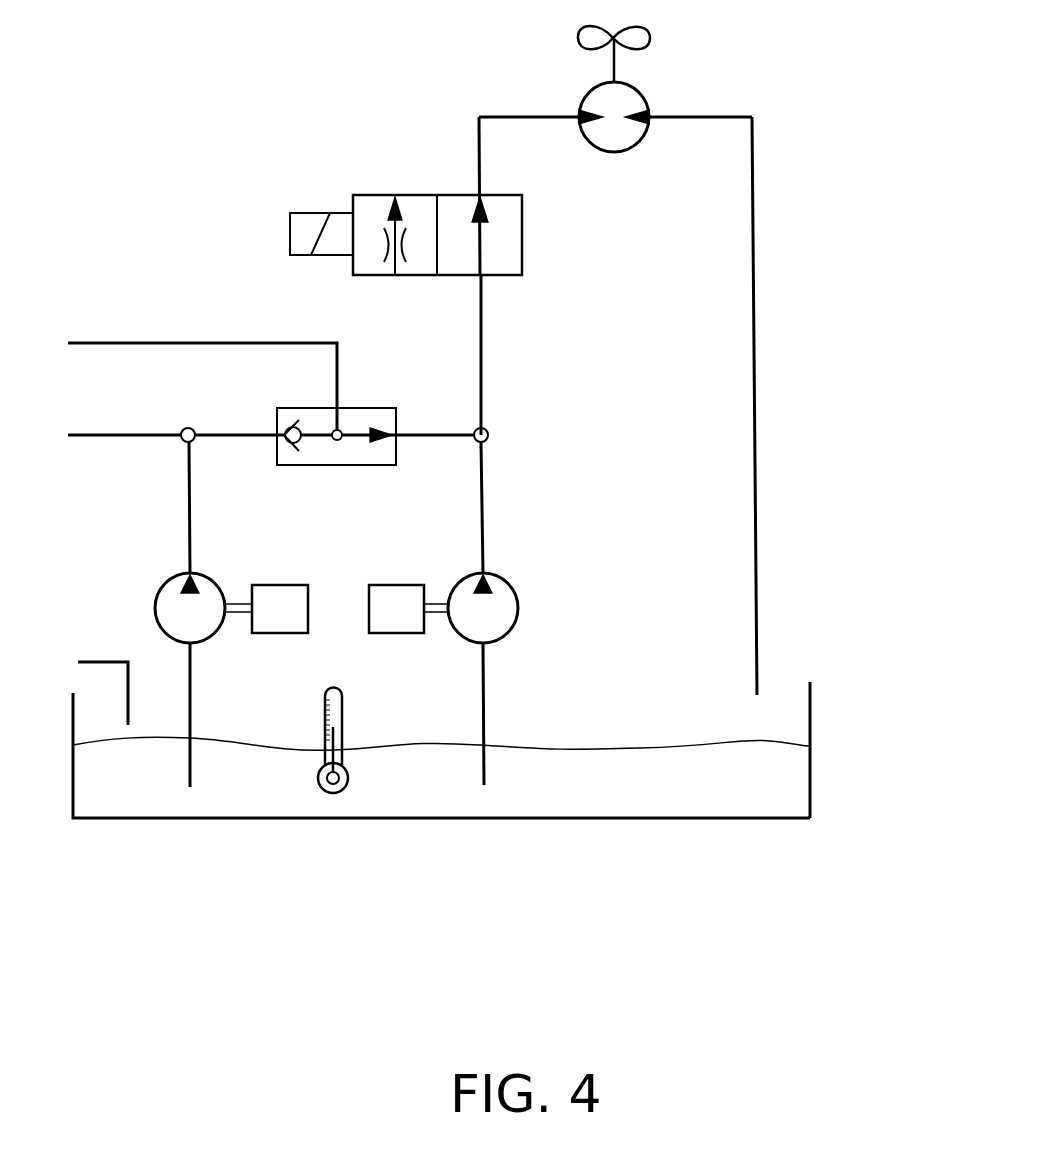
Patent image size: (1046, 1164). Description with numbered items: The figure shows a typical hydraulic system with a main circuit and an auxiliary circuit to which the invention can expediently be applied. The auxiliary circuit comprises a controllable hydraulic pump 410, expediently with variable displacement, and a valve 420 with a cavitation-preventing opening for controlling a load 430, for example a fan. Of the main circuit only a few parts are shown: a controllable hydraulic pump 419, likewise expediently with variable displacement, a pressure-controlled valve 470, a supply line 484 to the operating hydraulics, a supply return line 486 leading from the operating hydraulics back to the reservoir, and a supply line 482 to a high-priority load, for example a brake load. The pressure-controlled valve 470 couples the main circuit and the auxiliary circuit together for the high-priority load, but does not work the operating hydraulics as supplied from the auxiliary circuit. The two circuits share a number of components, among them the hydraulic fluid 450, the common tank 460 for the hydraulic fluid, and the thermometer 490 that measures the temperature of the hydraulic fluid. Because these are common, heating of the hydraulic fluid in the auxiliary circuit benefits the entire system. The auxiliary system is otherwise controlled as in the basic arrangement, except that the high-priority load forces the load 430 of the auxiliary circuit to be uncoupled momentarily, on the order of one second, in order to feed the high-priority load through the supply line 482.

The load in auxiliary circuit 430 is at (645, 92).
The valve in auxiliary circuit 420 is at (378, 153).
The supply line to high-priority load 482 is at (118, 343).
The supply line to the operating hydraulics 484 is at (115, 435).
The pressure-controlled valve 470 is at (365, 408).
The hydraulic pump system for main circuit 419 is at (243, 552).
The hydraulic pump system for auxiliary circuit 410 is at (422, 569).
The supply return line 486 is at (100, 662).
The thermometer 490 is at (342, 720).
The tank 460 is at (812, 718).
The hydraulic fluid 450 is at (753, 797).